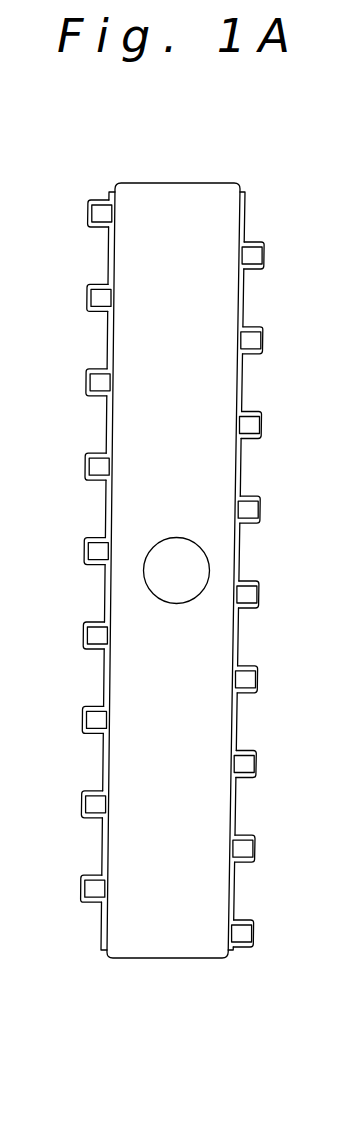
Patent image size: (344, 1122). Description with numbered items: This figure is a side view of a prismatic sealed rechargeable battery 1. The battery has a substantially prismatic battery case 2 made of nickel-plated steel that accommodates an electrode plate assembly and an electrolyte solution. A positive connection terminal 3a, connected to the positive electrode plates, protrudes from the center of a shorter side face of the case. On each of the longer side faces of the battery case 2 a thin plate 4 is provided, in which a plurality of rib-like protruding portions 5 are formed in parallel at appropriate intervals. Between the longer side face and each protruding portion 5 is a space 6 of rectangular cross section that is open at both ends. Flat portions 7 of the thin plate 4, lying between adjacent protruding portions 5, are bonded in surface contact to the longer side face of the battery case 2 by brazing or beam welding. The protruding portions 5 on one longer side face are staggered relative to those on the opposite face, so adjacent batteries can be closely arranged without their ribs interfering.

The prismatic sealed rechargeable battery 1 is at (128, 164).
The battery case 2 is at (177, 190).
The positive connection terminal 3a is at (165, 573).
The thin plate 4 is at (101, 419).
The rib-like protruding portion 5 is at (91, 211).
The space 6 is at (97, 226).
The flat portion 7 is at (107, 260).